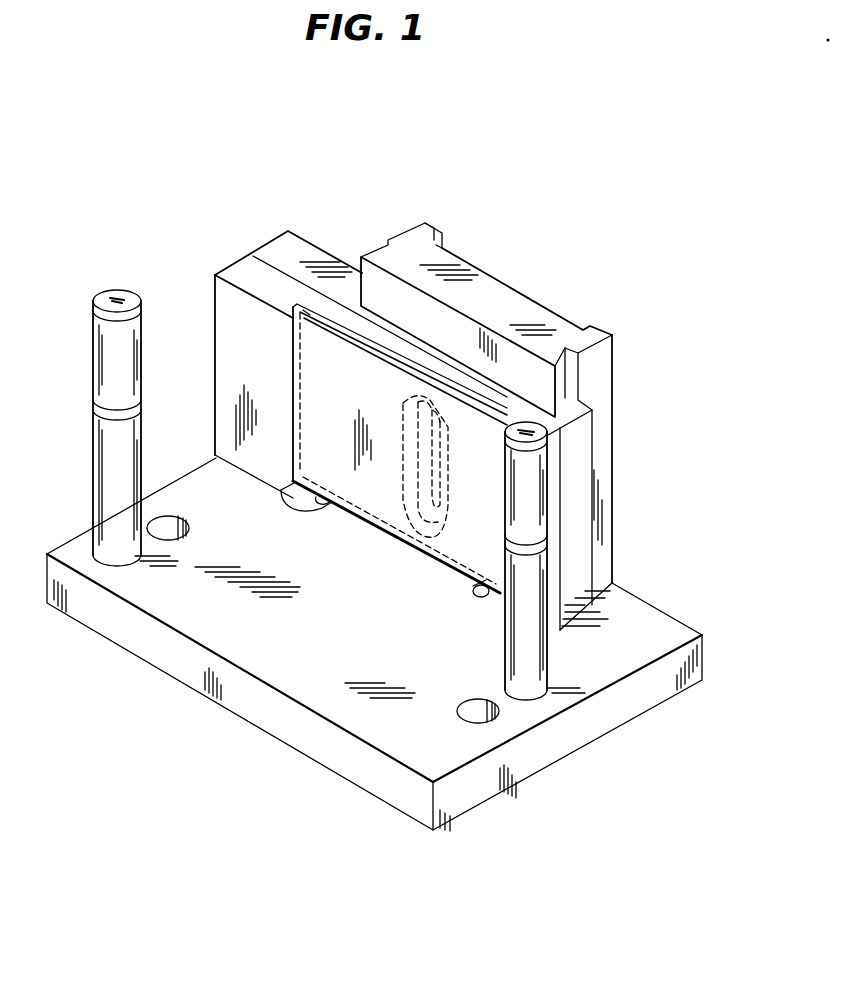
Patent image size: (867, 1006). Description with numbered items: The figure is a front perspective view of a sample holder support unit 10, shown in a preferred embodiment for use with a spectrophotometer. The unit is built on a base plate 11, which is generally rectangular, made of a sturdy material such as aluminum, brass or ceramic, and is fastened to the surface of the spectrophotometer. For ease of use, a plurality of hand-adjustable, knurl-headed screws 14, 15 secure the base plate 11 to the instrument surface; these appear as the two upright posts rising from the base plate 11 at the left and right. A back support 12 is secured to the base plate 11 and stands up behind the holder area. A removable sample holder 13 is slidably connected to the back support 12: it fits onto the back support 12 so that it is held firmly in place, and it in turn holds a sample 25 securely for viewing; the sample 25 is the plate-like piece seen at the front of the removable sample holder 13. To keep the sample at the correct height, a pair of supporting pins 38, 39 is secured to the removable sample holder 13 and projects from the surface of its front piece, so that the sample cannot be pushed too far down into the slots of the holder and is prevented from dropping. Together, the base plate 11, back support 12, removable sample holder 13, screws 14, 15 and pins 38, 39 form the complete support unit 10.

The sample holder support unit 10 is at (532, 226).
The base plate 11 is at (646, 640).
The back support 12 is at (606, 360).
The removable sample holder 13 is at (258, 236).
The knurl-headed screw 14 is at (101, 370).
The knurl-headed screw 15 is at (541, 471).
The sample 25 is at (330, 392).
The supporting pin 38 is at (322, 502).
The supporting pin 39 is at (473, 592).